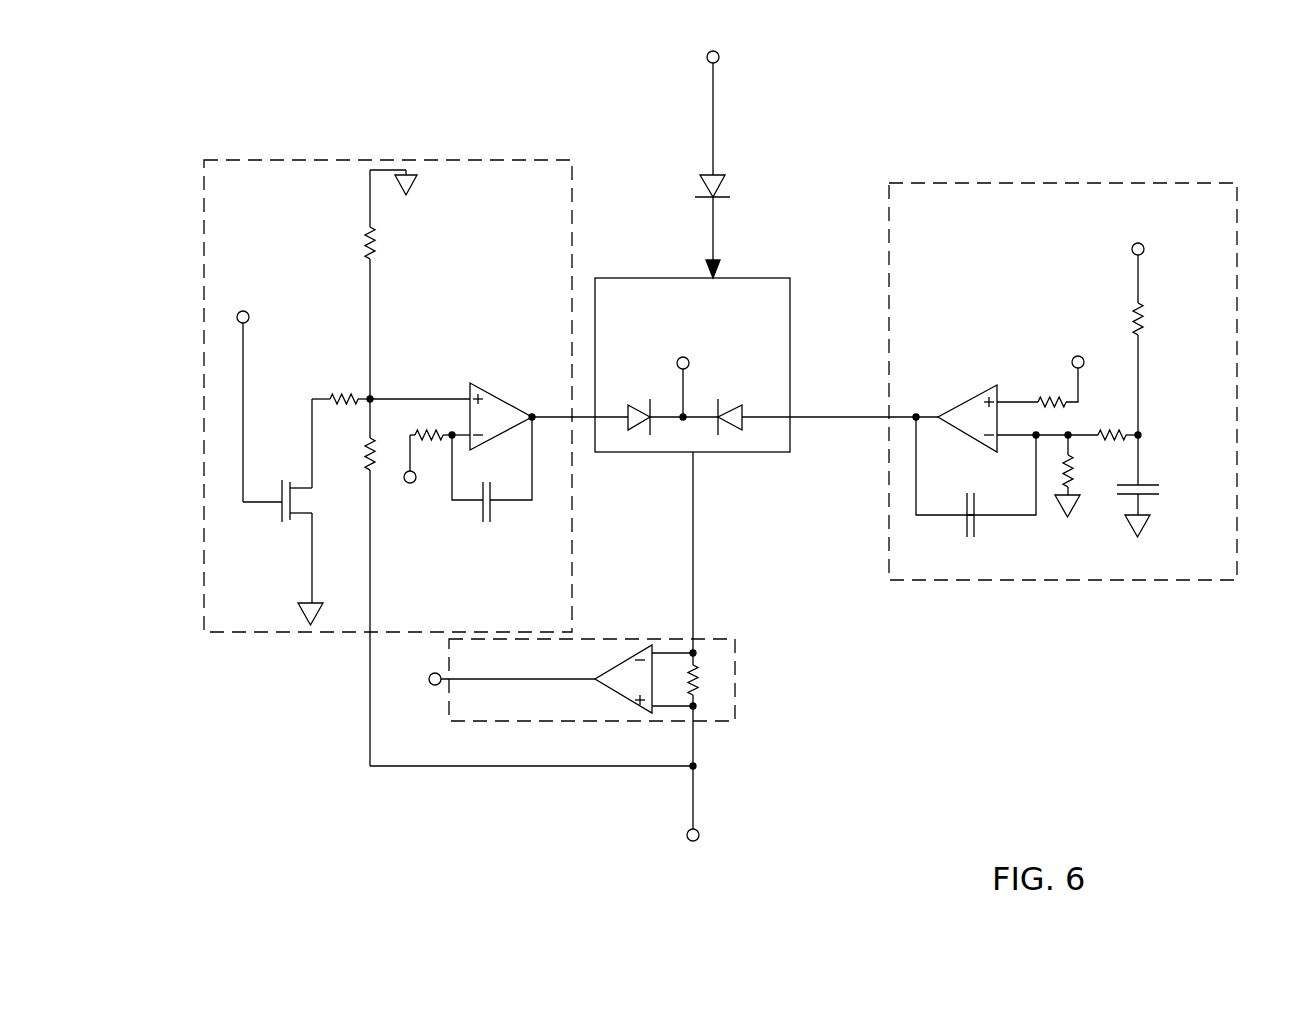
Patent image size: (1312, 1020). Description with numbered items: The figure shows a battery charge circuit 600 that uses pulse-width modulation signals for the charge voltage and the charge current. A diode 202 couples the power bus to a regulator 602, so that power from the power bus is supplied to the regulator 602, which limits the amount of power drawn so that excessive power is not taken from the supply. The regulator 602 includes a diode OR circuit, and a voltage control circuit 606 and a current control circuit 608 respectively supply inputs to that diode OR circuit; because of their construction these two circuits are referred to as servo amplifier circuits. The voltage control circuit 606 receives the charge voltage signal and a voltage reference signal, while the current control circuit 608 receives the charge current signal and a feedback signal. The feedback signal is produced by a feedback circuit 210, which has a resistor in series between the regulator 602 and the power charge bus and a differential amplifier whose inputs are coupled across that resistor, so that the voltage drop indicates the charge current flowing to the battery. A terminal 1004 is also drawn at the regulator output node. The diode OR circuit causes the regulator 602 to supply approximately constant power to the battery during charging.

The battery charge circuit 600 is at (1075, 128).
The voltage control circuit 606 is at (265, 159).
The regulator 602 is at (607, 278).
The diode 202 is at (727, 184).
The regulator output node 1004 is at (698, 388).
The current control circuit 608 is at (1003, 580).
The feedback circuit 210 is at (735, 680).